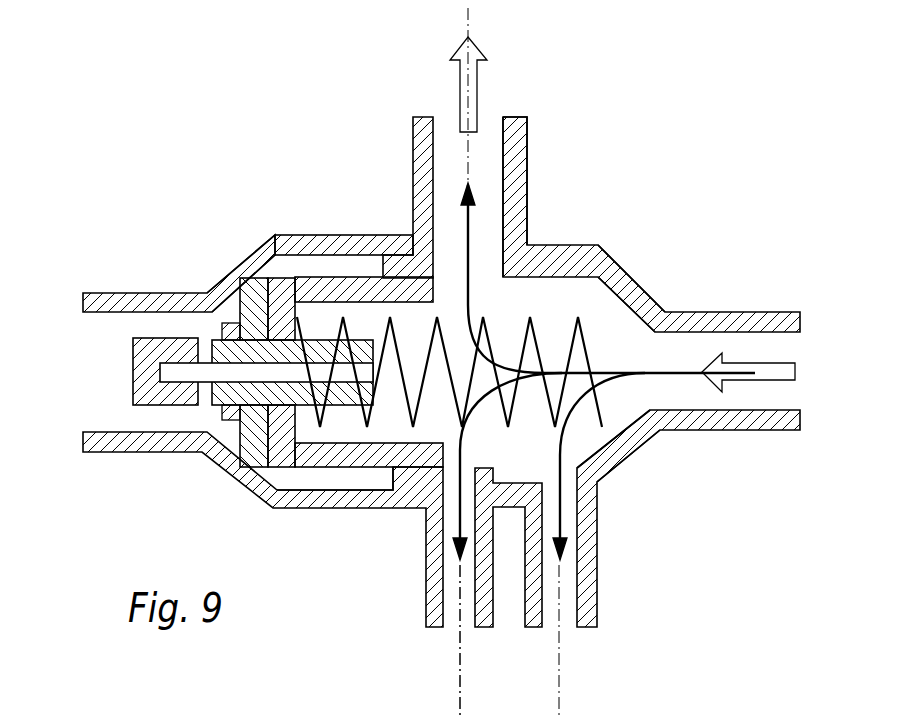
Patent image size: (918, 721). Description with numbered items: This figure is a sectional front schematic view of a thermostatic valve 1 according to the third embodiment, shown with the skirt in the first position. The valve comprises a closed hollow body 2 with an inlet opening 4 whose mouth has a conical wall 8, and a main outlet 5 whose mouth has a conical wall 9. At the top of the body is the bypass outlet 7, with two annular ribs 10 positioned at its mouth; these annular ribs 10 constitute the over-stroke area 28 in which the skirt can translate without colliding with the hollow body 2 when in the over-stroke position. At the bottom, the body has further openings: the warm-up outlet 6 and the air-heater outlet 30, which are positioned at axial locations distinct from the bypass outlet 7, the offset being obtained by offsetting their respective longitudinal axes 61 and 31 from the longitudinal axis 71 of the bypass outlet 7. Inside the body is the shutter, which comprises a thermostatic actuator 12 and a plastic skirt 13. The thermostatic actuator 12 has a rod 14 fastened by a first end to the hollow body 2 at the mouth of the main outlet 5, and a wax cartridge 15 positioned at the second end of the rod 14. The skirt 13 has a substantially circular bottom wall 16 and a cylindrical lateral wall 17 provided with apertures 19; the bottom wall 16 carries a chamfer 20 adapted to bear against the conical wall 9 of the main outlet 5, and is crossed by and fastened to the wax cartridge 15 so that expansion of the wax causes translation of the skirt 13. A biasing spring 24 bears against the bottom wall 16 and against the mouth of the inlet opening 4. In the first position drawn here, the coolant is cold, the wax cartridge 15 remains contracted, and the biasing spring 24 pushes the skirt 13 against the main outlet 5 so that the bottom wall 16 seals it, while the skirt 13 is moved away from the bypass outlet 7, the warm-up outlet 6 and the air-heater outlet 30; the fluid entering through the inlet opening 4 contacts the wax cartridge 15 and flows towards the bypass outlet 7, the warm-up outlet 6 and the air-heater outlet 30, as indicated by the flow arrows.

The thermostatic valve 1 is at (766, 85).
The hollow body 2 is at (597, 228).
The inlet opening 4 is at (780, 347).
The main outlet 5 is at (102, 374).
The warm-up outlet 6 is at (452, 628).
The bypass outlet 7 is at (493, 122).
The conical wall 8 is at (615, 317).
The conical wall 9 is at (273, 270).
The annular ribs 10 is at (435, 293).
The thermostatic actuator 12 is at (173, 532).
The skirt 13 is at (366, 478).
The rod 14 is at (203, 373).
The wax cartridge 15 is at (218, 388).
The bottom wall 16 is at (247, 295).
The lateral wall 17 is at (302, 235).
The apertures 19 is at (410, 343).
The chamfer 20 is at (232, 270).
The biasing spring 24 is at (588, 352).
The over-stroke area 28 is at (528, 297).
The air-heater outlet 30 is at (568, 630).
The longitudinal axis 31 is at (568, 594).
The longitudinal axis 61 is at (452, 594).
The longitudinal axis 71 is at (468, 22).